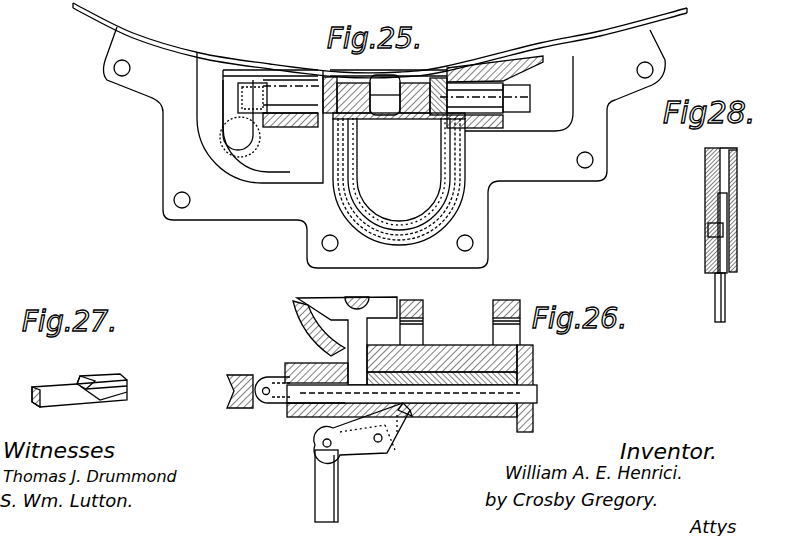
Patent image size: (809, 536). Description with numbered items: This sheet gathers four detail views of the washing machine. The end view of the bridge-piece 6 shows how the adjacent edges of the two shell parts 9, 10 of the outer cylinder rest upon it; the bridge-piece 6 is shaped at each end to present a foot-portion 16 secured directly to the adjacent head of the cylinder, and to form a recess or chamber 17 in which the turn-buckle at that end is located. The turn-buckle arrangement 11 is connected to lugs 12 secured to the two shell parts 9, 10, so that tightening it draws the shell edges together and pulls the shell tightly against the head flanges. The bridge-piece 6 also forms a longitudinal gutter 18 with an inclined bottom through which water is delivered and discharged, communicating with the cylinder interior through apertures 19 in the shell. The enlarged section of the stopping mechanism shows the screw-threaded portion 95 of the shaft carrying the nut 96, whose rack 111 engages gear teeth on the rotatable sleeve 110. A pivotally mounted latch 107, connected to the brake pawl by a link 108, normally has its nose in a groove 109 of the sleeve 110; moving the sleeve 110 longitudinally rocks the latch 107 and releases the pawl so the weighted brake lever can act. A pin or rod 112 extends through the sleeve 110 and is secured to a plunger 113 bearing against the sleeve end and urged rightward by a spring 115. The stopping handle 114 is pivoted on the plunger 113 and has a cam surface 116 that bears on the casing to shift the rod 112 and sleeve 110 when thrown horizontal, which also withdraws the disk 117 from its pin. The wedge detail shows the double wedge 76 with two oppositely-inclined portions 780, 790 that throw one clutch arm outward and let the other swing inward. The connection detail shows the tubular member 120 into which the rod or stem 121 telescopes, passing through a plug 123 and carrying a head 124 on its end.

In FIG. 25, the bridge-piece 6 is at (290, 170).
In FIG. 25, the shell part 9 is at (385, 57).
In FIG. 25, the shell part 10 is at (82, 10).
In FIG. 25, the turn-buckle arrangement 11 is at (333, 147).
In FIG. 25, the lugs 12 is at (265, 68).
In FIG. 25, the foot-portion 16 is at (173, 133).
In FIG. 25, the recess or chamber 17 is at (203, 130).
In FIG. 25, the longitudinal gutter 18 is at (236, 93).
In FIG. 25, the apertures 19 is at (256, 0).
In FIG. 27, the double wedge 76 is at (87, 383).
In FIG. 27, the inclined portion 780 is at (77, 386).
In FIG. 27, the inclined portion 790 is at (98, 400).
In FIG. 26, the screw-threaded portion 95 is at (390, 290).
In FIG. 26, the nut 96 is at (343, 311).
In FIG. 26, the latch 107 is at (360, 453).
In FIG. 26, the link 108 is at (330, 503).
In FIG. 26, the groove 109 is at (412, 412).
In FIG. 26, the rotatable sleeve 110 is at (530, 418).
In FIG. 26, the rack 111 is at (292, 363).
In FIG. 26, the pin or rod 112 is at (537, 402).
In FIG. 26, the plunger 113 is at (307, 390).
In FIG. 26, the stopping handle 114 is at (227, 386).
In FIG. 26, the spring 115 is at (300, 398).
In FIG. 26, the cam surface 116 is at (285, 372).
In FIG. 26, the disk 117 is at (533, 372).
In FIG. 28, the tubular member 120 is at (705, 175).
In FIG. 28, the rod or stem 121 is at (717, 298).
In FIG. 28, the plug 123 is at (713, 273).
In FIG. 28, the head 124 is at (710, 233).